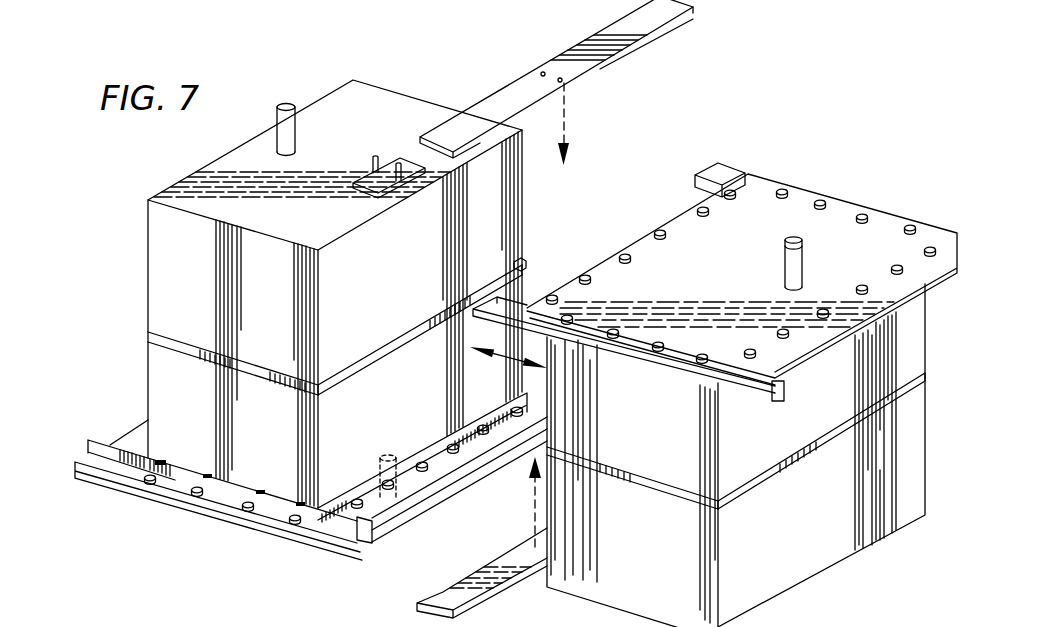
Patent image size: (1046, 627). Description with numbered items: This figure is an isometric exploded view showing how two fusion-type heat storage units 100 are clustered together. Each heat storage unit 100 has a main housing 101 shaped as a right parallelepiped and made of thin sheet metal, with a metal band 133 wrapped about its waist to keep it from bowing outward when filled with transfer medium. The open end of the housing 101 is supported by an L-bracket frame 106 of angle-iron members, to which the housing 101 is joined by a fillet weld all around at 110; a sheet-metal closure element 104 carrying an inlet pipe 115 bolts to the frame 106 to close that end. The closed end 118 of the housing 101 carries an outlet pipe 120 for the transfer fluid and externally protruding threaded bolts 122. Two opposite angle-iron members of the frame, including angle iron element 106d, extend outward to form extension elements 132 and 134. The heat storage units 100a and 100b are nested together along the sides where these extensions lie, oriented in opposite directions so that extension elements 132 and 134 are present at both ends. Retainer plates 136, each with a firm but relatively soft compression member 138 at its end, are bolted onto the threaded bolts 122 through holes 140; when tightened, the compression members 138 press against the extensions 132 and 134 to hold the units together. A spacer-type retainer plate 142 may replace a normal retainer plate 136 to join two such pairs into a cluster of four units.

The fusion-type heat storage unit 100 is at (532, 225).
The heat storage unit 100a is at (808, 568).
The heat storage unit 100b is at (148, 336).
The main housing 101 is at (160, 258).
The closure element 104 is at (165, 497).
The L-bracket frame 106 is at (362, 542).
The angle iron element 106d is at (84, 456).
The fillet weld 110 is at (160, 462).
The inlet pipe 115 is at (378, 458).
The closed end 118 is at (376, 106).
The outlet pipe 120 is at (294, 121).
The threaded bolts 122 is at (388, 168).
The extension element 132 is at (492, 300).
The metal band 133 is at (522, 263).
The extension element 134 is at (712, 173).
The retainer plate 136 is at (598, 47).
The compression member 138 is at (688, 20).
The holes 140 is at (542, 74).
The spacer-type retainer plate 142 is at (490, 576).